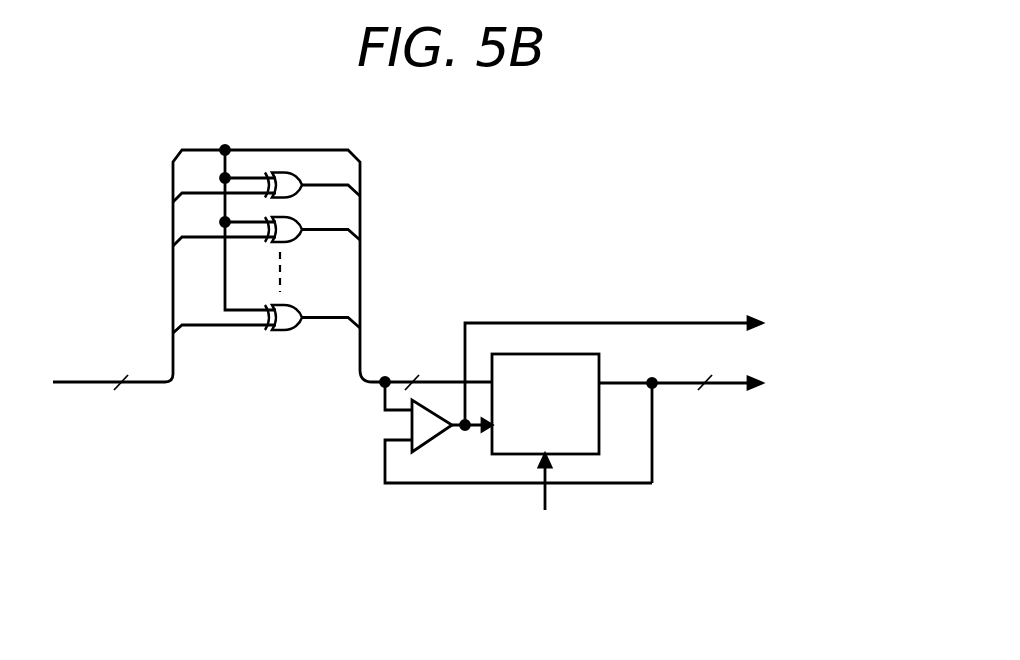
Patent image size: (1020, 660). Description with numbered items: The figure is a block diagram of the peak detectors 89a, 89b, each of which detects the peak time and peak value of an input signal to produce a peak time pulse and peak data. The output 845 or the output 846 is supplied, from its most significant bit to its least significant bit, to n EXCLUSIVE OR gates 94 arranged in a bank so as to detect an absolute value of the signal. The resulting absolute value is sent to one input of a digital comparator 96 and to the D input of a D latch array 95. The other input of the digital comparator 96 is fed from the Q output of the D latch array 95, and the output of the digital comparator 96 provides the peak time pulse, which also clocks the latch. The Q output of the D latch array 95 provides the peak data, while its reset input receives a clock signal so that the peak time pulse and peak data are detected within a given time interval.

The peak detector 89a is at (582, 178).
The peak detector 89b is at (462, 328).
The EXCLUSIVE OR gates 94 is at (345, 146).
The D latch array 95 is at (602, 362).
The digital comparator 96 is at (412, 422).
The output 845 is at (67, 382).
The output 846 is at (113, 382).